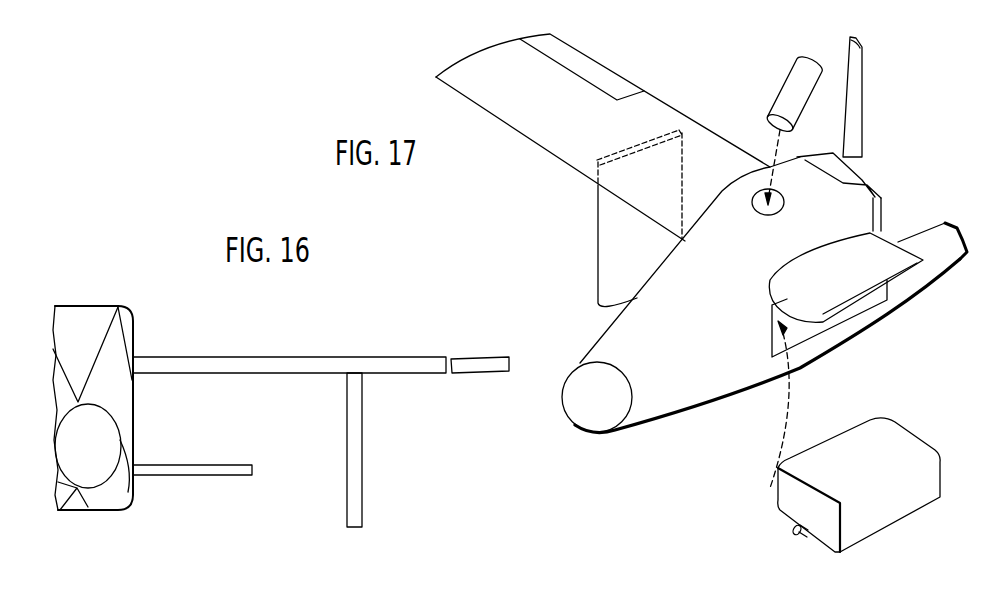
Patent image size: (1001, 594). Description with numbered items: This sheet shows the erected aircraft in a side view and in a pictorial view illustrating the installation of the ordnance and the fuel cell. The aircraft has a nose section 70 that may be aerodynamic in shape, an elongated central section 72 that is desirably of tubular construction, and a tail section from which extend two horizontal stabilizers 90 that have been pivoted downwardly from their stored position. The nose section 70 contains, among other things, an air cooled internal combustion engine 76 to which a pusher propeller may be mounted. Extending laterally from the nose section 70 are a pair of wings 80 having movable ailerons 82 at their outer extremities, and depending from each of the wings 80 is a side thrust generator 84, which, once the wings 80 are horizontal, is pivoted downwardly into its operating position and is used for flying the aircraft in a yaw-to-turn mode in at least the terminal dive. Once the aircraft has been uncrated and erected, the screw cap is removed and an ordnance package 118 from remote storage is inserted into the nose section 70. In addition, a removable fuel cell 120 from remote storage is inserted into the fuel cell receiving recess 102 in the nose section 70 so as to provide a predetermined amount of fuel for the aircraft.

In FIG. 17, the nose section 70 is at (645, 418).
In FIG. 17, the elongated central section 72 is at (940, 223).
In FIG. 17, the air cooled internal combustion engine 76 is at (855, 174).
In FIG. 16, the wings 80 is at (358, 355).
In FIG. 17, the wings 80 is at (520, 122).
In FIG. 17, the movable ailerons 82 is at (622, 78).
In FIG. 16, the side thrust generator 84 is at (362, 437).
In FIG. 17, the side thrust generator 84 is at (598, 248).
In FIG. 16, the horizontal stabilizers 90 is at (223, 462).
In FIG. 17, the fuel cell receiving recess 102 is at (770, 343).
In FIG. 17, the ordnance package 118 is at (773, 102).
In FIG. 17, the removable fuel cell 120 is at (857, 432).